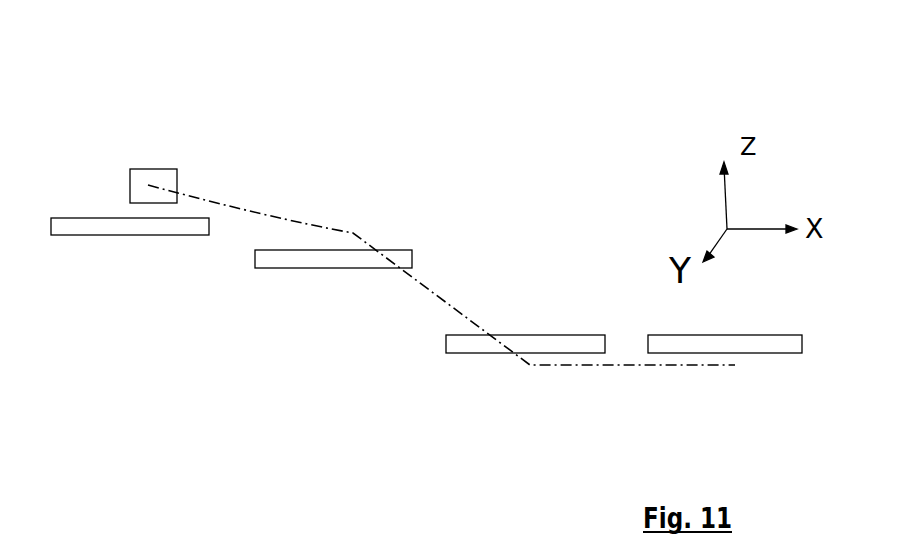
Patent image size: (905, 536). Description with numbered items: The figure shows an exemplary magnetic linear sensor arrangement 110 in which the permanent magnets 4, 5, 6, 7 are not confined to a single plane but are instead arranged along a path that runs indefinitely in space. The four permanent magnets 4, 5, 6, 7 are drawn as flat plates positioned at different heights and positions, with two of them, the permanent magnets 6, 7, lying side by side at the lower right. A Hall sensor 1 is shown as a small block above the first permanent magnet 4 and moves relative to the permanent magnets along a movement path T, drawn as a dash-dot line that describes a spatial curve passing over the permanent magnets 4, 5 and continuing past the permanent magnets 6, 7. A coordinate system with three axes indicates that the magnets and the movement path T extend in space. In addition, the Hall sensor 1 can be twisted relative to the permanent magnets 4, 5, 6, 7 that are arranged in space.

The Hall sensor 1 is at (162, 170).
The permanent magnet 4 is at (83, 227).
The permanent magnet 5 is at (315, 250).
The permanent magnet 6 is at (520, 358).
The permanent magnet 7 is at (663, 360).
The magnetic linear sensor arrangement 110 is at (422, 168).
The movement path T is at (447, 303).